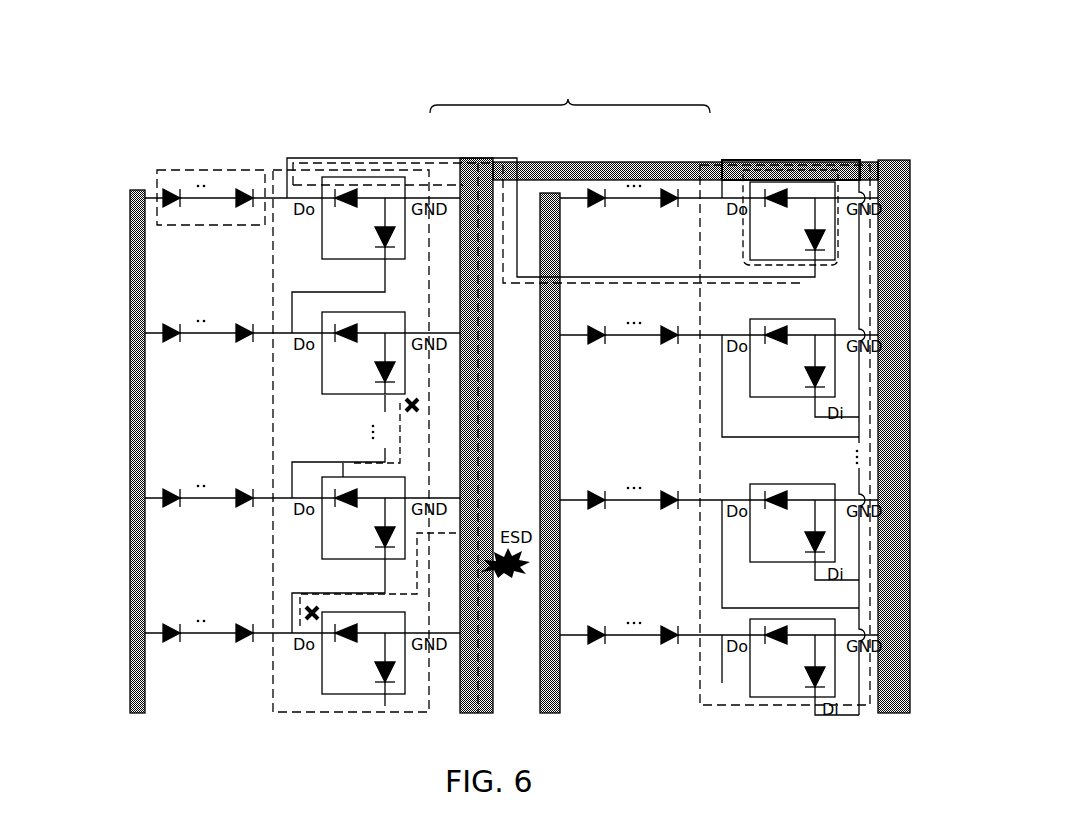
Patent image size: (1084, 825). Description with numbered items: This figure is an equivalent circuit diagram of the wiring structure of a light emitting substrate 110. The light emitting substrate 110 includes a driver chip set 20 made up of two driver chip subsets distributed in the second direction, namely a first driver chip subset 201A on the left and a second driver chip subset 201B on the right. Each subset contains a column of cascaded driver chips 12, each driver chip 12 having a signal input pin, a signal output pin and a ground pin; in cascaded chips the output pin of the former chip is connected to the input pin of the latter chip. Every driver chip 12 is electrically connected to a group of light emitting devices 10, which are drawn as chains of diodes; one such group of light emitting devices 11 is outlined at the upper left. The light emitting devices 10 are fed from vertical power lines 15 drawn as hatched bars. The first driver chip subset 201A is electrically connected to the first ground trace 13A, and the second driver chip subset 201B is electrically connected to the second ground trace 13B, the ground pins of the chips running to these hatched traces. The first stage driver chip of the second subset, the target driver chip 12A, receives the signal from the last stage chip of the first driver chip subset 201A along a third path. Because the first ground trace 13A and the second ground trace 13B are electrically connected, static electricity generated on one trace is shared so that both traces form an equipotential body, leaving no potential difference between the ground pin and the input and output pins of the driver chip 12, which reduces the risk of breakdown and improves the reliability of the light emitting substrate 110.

The light emitting substrate 110 is at (96, 98).
The light emitting devices 10 is at (163, 226).
The light emitting unit group 11 is at (162, 188).
The driver chip 12 is at (337, 695).
The target driver chip 12A is at (787, 165).
The first ground trace 13A is at (480, 688).
The second ground trace 13B is at (897, 690).
The power line 15 is at (136, 680).
The driver chip set 20 is at (570, 95).
The first driver chip subset 201A is at (430, 172).
The second driver chip subset 201B is at (703, 166).